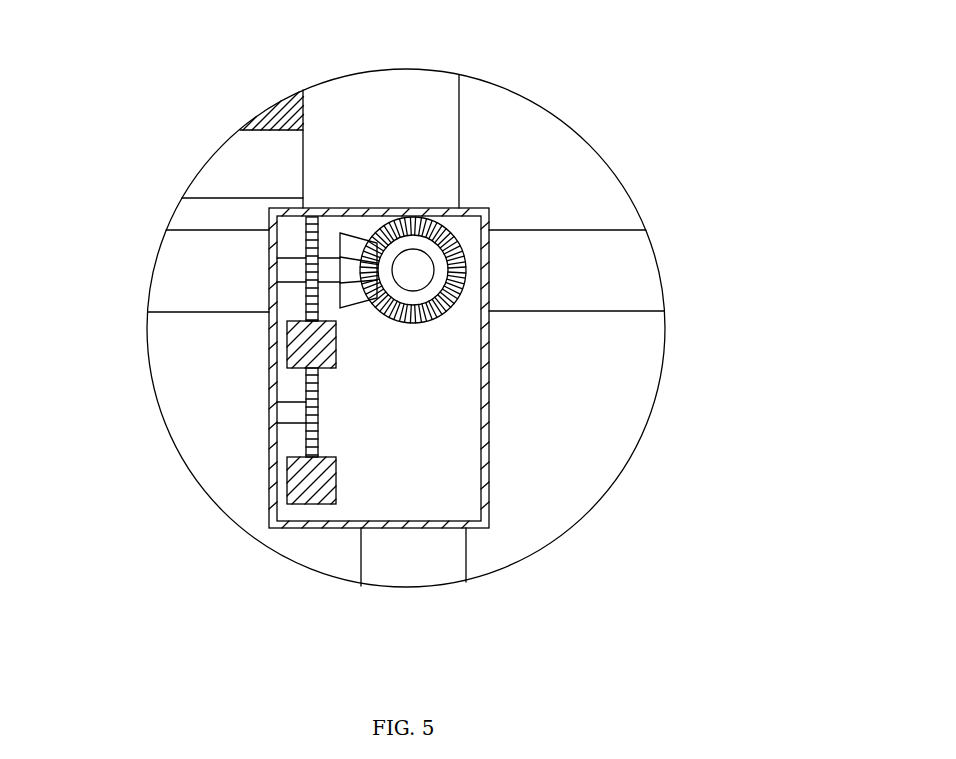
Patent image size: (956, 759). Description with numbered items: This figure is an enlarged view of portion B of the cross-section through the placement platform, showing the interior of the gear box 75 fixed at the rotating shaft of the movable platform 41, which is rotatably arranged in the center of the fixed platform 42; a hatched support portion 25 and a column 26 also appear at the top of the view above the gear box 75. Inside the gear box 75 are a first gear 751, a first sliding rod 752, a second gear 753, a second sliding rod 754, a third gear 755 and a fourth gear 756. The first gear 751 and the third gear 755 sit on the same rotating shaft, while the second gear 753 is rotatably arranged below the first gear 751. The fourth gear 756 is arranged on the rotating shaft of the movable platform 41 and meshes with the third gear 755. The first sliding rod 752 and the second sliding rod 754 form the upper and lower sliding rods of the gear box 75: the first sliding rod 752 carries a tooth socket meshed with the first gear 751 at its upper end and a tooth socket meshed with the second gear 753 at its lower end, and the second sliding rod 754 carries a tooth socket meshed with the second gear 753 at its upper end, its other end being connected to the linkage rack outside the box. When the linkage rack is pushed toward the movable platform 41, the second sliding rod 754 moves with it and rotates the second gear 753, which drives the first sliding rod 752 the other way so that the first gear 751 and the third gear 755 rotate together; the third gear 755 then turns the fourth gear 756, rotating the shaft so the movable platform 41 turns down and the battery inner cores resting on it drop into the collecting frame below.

The portion B is at (558, 117).
The hatched support portion 25 is at (277, 157).
The vertical column 26 is at (391, 133).
The movable platform 41 is at (563, 269).
The fixed platform 42 is at (208, 253).
The gear box 75 is at (485, 263).
The first gear 751 is at (313, 242).
The first sliding rod 752 is at (308, 335).
The second gear 753 is at (313, 404).
The second sliding rod 754 is at (313, 485).
The third gear 755 is at (357, 300).
The fourth gear 756 is at (448, 311).